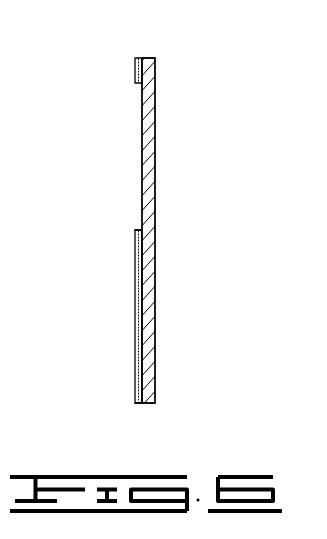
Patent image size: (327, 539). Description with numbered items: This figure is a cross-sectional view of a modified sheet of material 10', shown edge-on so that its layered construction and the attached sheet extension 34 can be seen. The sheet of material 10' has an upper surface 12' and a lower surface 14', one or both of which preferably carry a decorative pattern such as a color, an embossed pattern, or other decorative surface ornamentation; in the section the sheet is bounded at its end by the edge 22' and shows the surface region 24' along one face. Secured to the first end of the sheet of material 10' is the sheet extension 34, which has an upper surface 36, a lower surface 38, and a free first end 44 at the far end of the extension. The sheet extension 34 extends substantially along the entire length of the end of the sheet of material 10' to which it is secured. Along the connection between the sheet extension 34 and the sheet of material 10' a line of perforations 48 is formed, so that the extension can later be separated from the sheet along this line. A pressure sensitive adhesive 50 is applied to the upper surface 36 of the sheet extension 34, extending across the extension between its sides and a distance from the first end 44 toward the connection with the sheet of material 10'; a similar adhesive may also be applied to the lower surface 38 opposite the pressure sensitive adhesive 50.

The sheet of material 10' is at (153, 239).
The upper surface 12' is at (103, 316).
The lower surface 14' is at (185, 233).
The bottom edge 22' is at (174, 426).
The outer layer 24' is at (143, 299).
The sheet extension 34 is at (160, 239).
The upper surface 36 is at (141, 152).
The lower surface 38 is at (156, 170).
The first end 44 is at (148, 57).
The line of perforations 48 is at (153, 221).
The pressure sensitive adhesive 50 is at (135, 70).